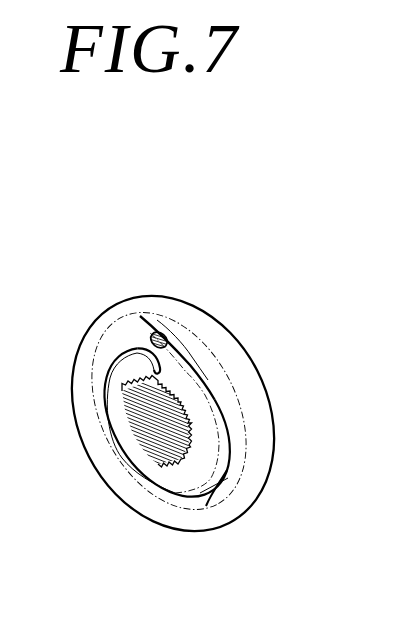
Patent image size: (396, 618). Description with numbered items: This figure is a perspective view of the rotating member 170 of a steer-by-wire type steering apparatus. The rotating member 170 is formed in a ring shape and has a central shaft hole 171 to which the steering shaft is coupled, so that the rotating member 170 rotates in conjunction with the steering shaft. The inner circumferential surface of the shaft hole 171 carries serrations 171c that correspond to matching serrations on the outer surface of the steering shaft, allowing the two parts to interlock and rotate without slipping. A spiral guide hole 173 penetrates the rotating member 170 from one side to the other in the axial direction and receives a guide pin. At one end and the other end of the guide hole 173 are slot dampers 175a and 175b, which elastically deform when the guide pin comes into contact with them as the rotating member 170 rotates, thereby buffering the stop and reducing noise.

The rotating member 170 is at (240, 395).
The shaft hole 171 is at (176, 400).
The serrations 171c is at (138, 437).
The spiral guide hole 173 is at (170, 498).
The slot damper 175a is at (143, 328).
The slot damper 175b is at (165, 366).